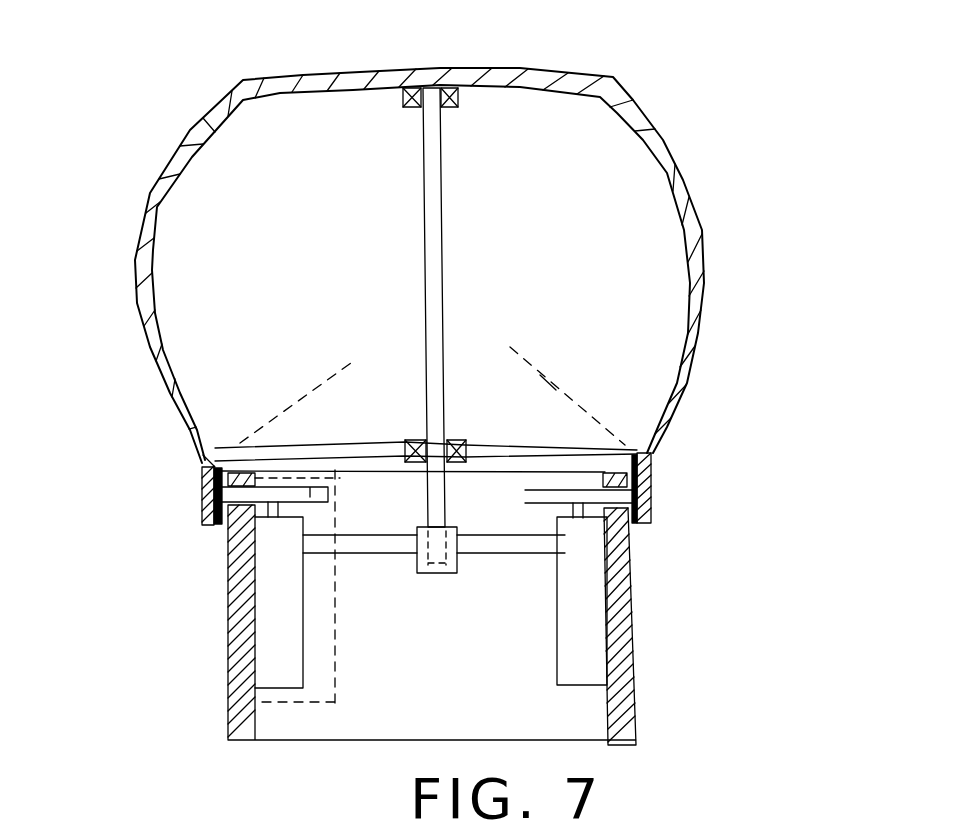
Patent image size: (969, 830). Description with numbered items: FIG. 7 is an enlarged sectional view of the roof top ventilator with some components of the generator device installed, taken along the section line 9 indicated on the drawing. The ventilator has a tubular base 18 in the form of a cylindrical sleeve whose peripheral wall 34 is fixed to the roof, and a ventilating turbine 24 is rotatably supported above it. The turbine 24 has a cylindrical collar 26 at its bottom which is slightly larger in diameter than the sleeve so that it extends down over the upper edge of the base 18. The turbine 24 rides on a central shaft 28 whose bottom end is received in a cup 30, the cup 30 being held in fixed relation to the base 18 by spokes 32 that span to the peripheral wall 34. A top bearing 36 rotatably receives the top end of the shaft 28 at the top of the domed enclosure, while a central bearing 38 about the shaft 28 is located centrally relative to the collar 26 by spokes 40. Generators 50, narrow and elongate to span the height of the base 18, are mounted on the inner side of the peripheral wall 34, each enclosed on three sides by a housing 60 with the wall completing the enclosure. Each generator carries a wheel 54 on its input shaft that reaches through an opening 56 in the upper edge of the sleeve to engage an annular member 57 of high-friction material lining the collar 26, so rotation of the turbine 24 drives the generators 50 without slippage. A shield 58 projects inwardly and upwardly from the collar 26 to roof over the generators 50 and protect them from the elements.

The section line 9- 9 is at (97, 510).
The tubular base 18 is at (117, 622).
The ventilating turbine 24 is at (750, 250).
The cylindrical collar 26 is at (657, 457).
The central shaft 28 is at (440, 258).
The cup 30 is at (433, 573).
The spokes 32 is at (500, 558).
The peripheral wall 34 is at (632, 663).
The top bearing 36 is at (450, 83).
The central bearing 38 is at (455, 440).
The spokes 40 is at (353, 448).
The generators 50 is at (290, 650).
The wheel 54 is at (328, 496).
The openings 56 is at (228, 510).
The annular member 57 is at (202, 487).
The shield 58 is at (547, 383).
The housings 60 is at (335, 660).